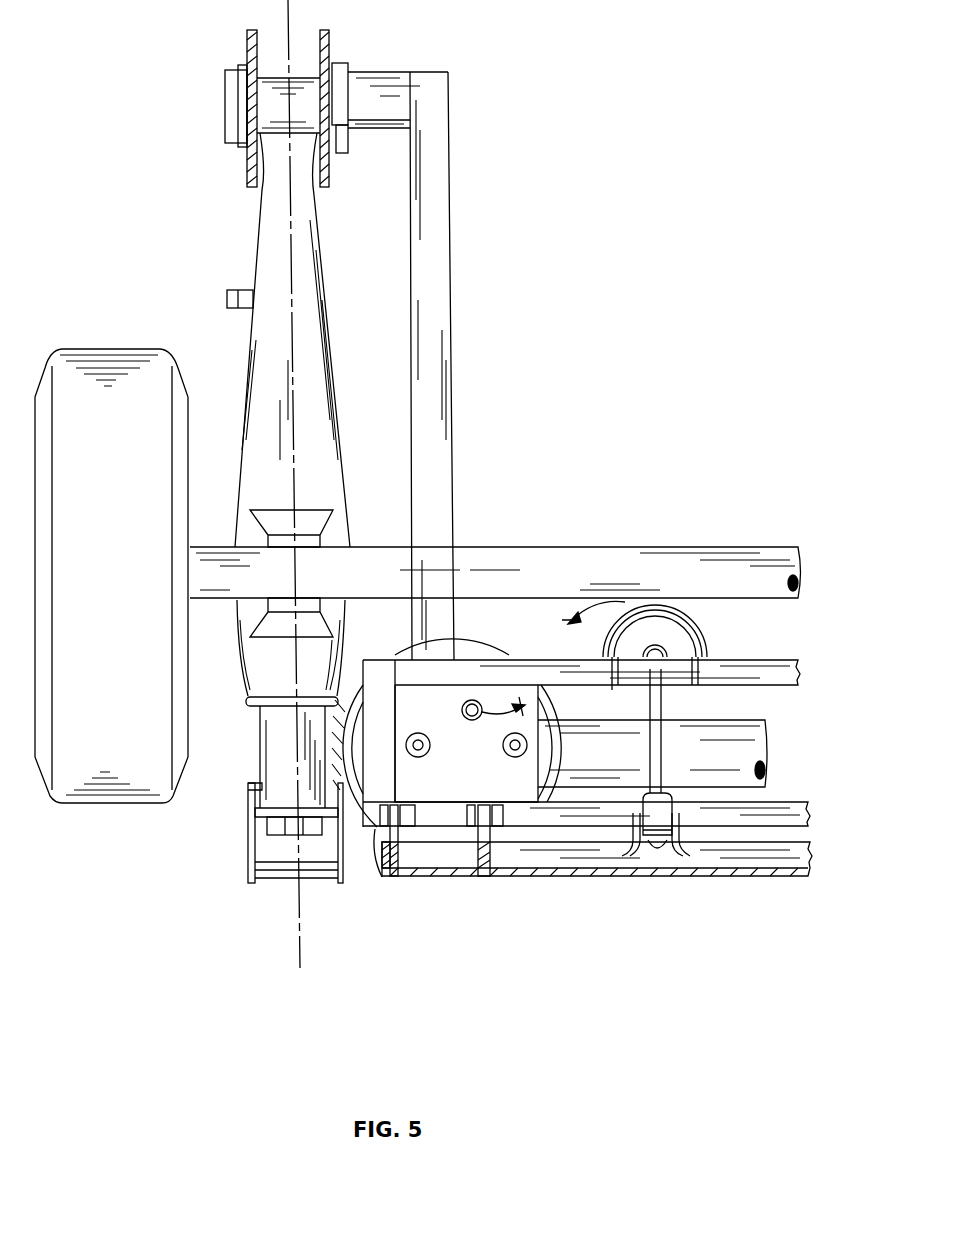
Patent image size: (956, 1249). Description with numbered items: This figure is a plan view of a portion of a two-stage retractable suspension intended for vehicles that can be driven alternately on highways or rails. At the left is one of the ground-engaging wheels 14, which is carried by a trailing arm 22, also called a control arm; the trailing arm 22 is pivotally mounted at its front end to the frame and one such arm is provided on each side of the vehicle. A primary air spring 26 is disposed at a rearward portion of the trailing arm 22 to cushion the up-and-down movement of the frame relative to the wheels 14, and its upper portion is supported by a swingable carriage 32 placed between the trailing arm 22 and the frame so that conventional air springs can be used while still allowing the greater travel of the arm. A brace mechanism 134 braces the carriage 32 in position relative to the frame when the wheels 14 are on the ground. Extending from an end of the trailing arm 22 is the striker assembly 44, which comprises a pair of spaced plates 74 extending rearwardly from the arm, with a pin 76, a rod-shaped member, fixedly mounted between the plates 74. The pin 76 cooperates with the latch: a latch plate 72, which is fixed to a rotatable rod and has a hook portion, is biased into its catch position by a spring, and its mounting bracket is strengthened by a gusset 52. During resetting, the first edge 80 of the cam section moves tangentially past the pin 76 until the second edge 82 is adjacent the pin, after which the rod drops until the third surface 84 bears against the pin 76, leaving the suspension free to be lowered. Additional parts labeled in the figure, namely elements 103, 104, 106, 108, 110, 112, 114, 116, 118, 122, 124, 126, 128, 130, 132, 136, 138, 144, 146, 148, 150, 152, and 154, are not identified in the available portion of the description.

The ground-engaging wheels 14 is at (98, 410).
The trailing arm 22 is at (268, 343).
The primary air spring 26 is at (553, 750).
The carriage 32 is at (247, 45).
The striker assembly 44 is at (220, 912).
The gusset 52 is at (346, 66).
The latch plate 72 is at (228, 850).
The spaced plates 74 is at (750, 742).
The pin 76 is at (286, 872).
The first edge 80 is at (238, 290).
The second edge 82 is at (572, 562).
The third surface 84 is at (358, 531).
The axis 103 is at (302, 951).
The lower shaft 104 is at (280, 764).
The collar 106 is at (275, 702).
The flange 108 is at (250, 786).
The bushing 110 is at (275, 828).
The direction arrow 112 is at (460, 482).
The arm 114 is at (383, 85).
The strut 116 is at (440, 296).
The plate 118 is at (760, 668).
The plate 122 is at (778, 812).
The disc 124 is at (455, 700).
The bracket 126 is at (376, 680).
The bolts 128 is at (426, 757).
The pivot pin 130 is at (462, 712).
The rotation arrow 132 is at (490, 716).
The brace mechanism 134 is at (792, 886).
The bolts 136 is at (440, 877).
The bracket 138 is at (372, 868).
The base plate 144 is at (605, 862).
The roller 146 is at (683, 634).
The stem 148 is at (656, 703).
The collar 150 is at (662, 806).
The clip 152 is at (676, 848).
The bracket legs 154 is at (700, 678).